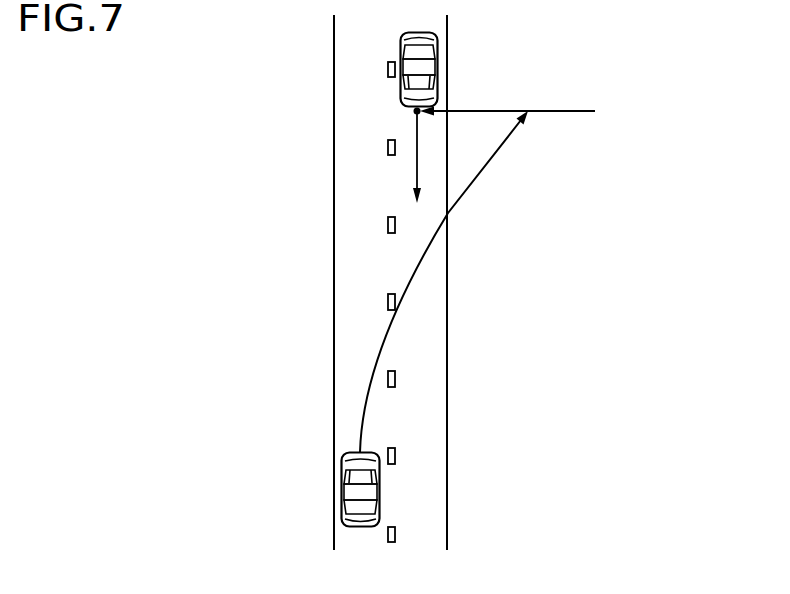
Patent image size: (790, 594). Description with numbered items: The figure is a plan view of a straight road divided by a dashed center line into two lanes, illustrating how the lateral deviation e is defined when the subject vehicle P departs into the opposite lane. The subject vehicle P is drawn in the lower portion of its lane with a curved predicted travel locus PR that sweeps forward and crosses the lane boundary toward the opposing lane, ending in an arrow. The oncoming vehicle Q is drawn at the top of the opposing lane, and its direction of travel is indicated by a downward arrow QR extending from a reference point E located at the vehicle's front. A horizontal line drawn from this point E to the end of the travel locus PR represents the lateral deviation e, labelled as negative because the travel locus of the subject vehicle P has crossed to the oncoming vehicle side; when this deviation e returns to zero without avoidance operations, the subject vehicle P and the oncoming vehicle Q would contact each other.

The oncoming vehicle Q is at (432, 45).
The subject vehicle P is at (356, 495).
The reference point E is at (415, 112).
The lateral deviation e is at (507, 97).
The oncoming vehicle travel direction QR is at (417, 128).
The subject vehicle predicted route PR is at (422, 260).